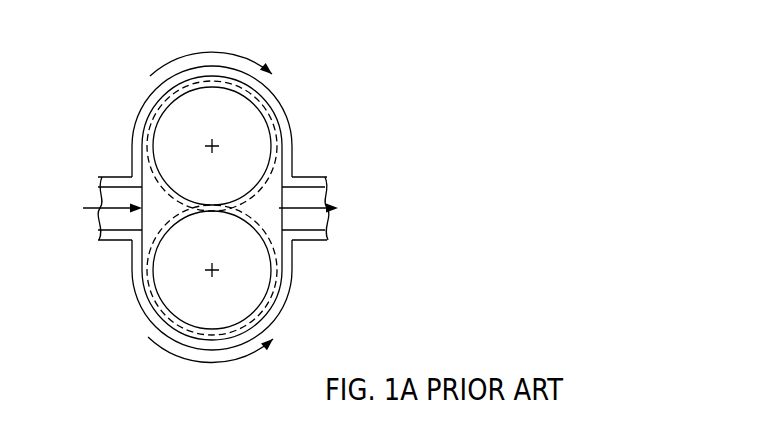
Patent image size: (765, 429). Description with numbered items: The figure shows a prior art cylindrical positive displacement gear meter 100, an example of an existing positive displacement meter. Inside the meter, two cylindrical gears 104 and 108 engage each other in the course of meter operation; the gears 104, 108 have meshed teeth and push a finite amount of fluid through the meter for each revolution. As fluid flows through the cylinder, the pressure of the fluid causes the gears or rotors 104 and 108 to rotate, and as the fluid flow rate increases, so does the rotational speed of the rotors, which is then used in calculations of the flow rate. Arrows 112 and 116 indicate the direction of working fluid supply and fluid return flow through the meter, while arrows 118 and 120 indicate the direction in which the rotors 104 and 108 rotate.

The cylindrical positive displacement gear meter 100 is at (118, 98).
The gear 104 is at (247, 119).
The gear 108 is at (238, 287).
The arrow 112 is at (92, 207).
The arrow 116 is at (305, 205).
The arrow 118 is at (211, 50).
The arrow 120 is at (210, 362).